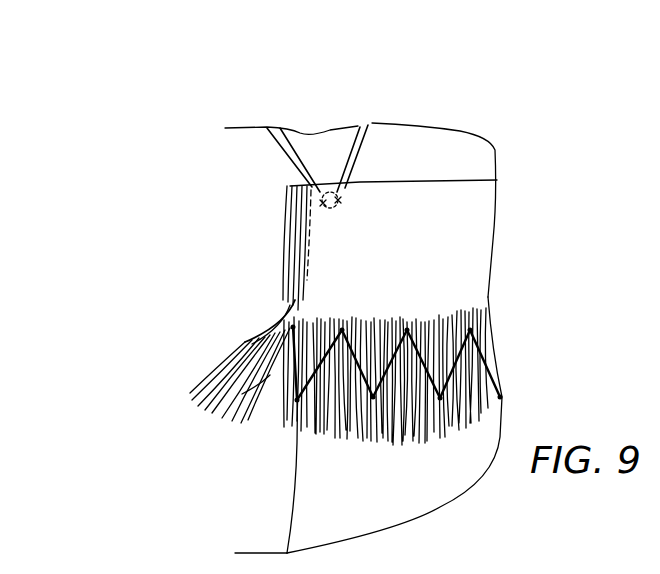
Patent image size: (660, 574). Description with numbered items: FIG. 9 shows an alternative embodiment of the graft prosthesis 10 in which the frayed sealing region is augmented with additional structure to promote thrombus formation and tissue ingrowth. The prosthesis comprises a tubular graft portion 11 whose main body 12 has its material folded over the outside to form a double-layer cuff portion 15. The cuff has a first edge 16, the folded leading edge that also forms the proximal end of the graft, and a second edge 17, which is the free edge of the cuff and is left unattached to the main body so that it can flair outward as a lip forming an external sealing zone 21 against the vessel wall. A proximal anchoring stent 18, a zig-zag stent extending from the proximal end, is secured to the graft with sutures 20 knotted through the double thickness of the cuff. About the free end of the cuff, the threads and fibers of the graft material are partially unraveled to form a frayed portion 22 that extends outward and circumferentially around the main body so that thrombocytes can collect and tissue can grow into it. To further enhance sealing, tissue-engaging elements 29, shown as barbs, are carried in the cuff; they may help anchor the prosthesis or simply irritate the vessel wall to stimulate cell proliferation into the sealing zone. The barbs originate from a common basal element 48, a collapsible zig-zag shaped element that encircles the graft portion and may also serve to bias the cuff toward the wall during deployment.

The graft prosthesis 10 is at (502, 180).
The graft portion 11 is at (498, 223).
The main body 12 is at (303, 442).
The cuff portion 15 is at (300, 225).
The first edge 16 is at (407, 170).
The second edge 17 is at (332, 445).
The proximal anchoring stent 18 is at (297, 150).
The sutures 20 is at (305, 188).
The external sealing zone 21 is at (248, 330).
The frayed portion 22 is at (240, 343).
The tissue-engaging elements 29 is at (242, 394).
The common basal element 48 is at (483, 347).